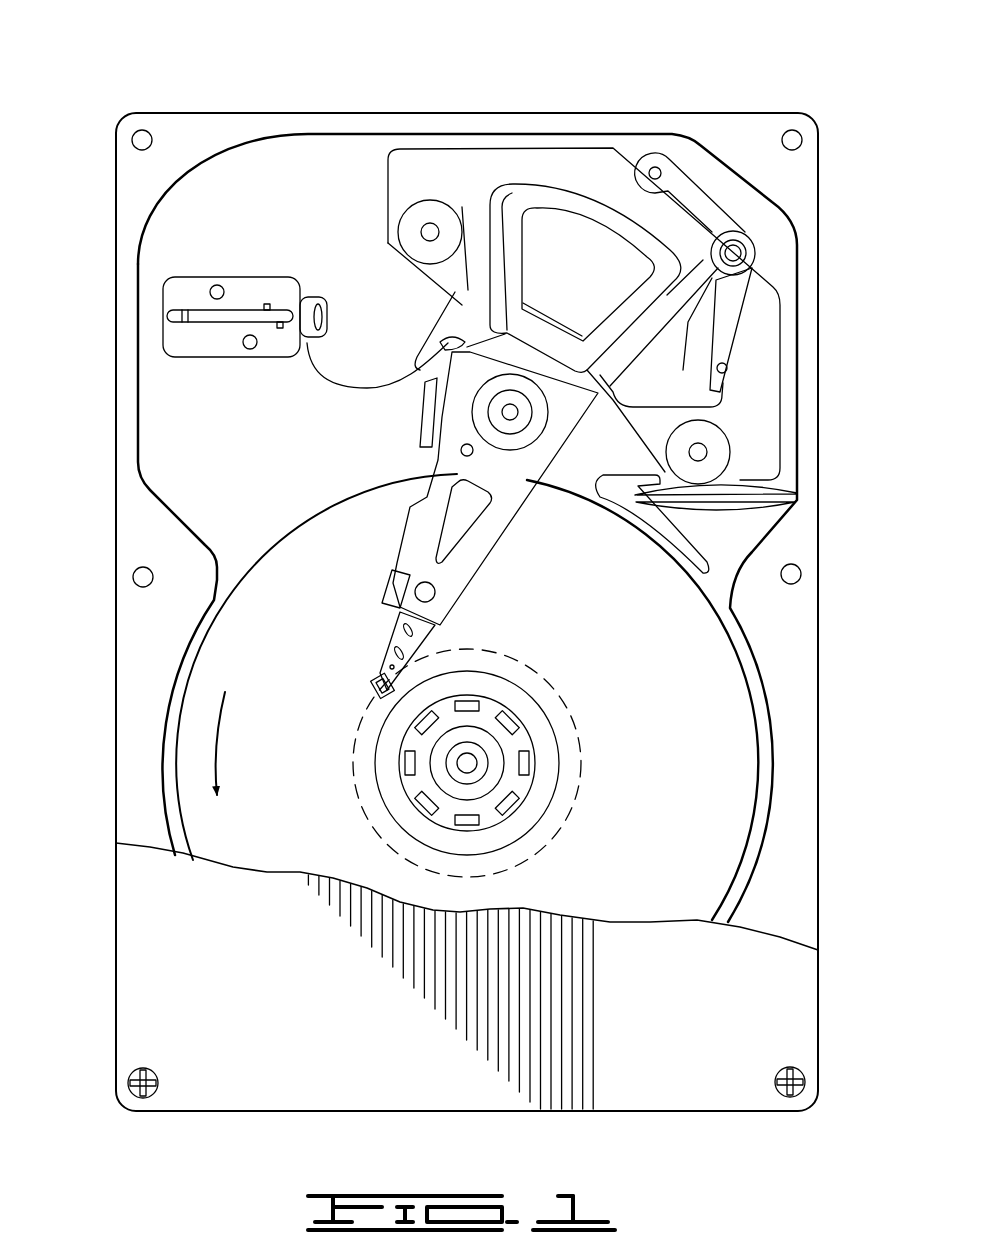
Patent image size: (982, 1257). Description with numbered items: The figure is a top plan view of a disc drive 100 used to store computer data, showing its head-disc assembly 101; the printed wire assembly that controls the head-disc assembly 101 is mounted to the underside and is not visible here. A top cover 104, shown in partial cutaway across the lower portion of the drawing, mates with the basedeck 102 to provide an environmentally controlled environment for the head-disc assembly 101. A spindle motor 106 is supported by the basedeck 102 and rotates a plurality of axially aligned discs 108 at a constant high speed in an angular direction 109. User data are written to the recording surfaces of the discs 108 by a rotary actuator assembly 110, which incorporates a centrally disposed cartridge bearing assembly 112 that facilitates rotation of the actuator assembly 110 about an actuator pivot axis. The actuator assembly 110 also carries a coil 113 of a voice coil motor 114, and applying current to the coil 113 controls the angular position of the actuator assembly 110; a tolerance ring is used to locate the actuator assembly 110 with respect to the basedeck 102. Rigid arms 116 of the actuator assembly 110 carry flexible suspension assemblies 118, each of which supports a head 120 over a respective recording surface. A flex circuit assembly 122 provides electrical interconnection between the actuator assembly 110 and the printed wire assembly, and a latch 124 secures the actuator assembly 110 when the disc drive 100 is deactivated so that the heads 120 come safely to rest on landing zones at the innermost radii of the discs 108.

The disc drive 100 is at (215, 75).
The head-disc assembly 101 is at (148, 185).
The basedeck 102 is at (172, 430).
The top cover 104 is at (167, 918).
The spindle motor 106 is at (502, 753).
The discs 108 is at (733, 776).
The angular direction 109 is at (218, 738).
The rotary actuator assembly 110 is at (490, 482).
The cartridge bearing assembly 112 is at (517, 425).
The coil 113 is at (642, 290).
The voice coil motor 114 is at (537, 190).
The rigid arms 116 is at (477, 537).
The flexible suspension assemblies 118 is at (398, 640).
The head 120 is at (542, 688).
The flex circuit assembly 122 is at (352, 387).
The latch 124 is at (733, 305).